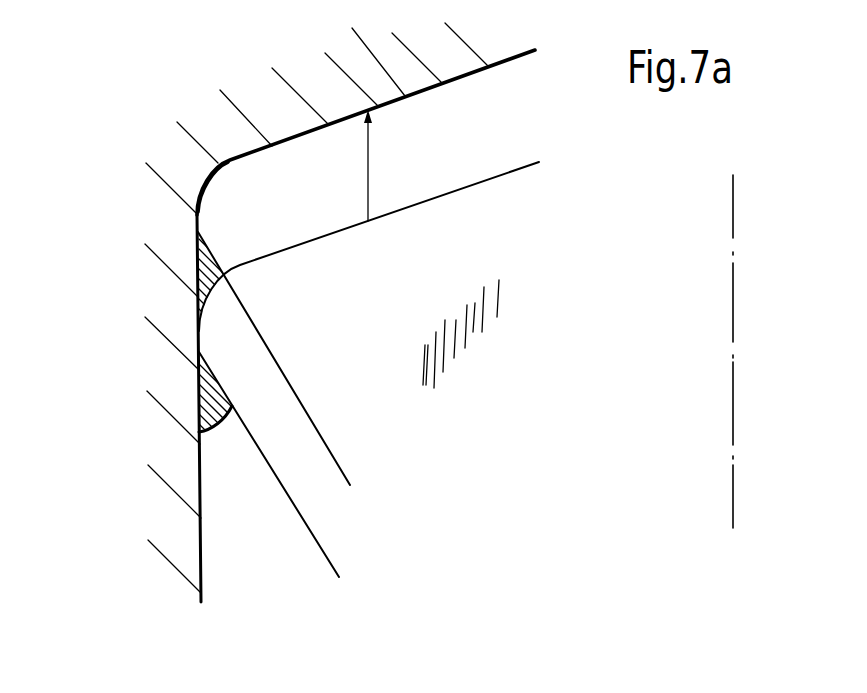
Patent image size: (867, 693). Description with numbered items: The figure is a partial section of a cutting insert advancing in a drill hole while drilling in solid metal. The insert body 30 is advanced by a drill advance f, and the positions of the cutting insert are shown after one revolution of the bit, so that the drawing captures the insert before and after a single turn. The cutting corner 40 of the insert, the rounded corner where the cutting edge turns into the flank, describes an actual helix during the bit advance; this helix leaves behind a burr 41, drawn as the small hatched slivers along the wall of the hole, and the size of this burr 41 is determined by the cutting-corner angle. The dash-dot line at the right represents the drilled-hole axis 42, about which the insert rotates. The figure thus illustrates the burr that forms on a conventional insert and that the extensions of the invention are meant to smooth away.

The tool body 30 is at (340, 301).
The cutting corner 40 is at (204, 177).
The burr 41 is at (207, 278).
The drilled-hole axis 42 is at (733, 388).
The drill advance f is at (368, 160).